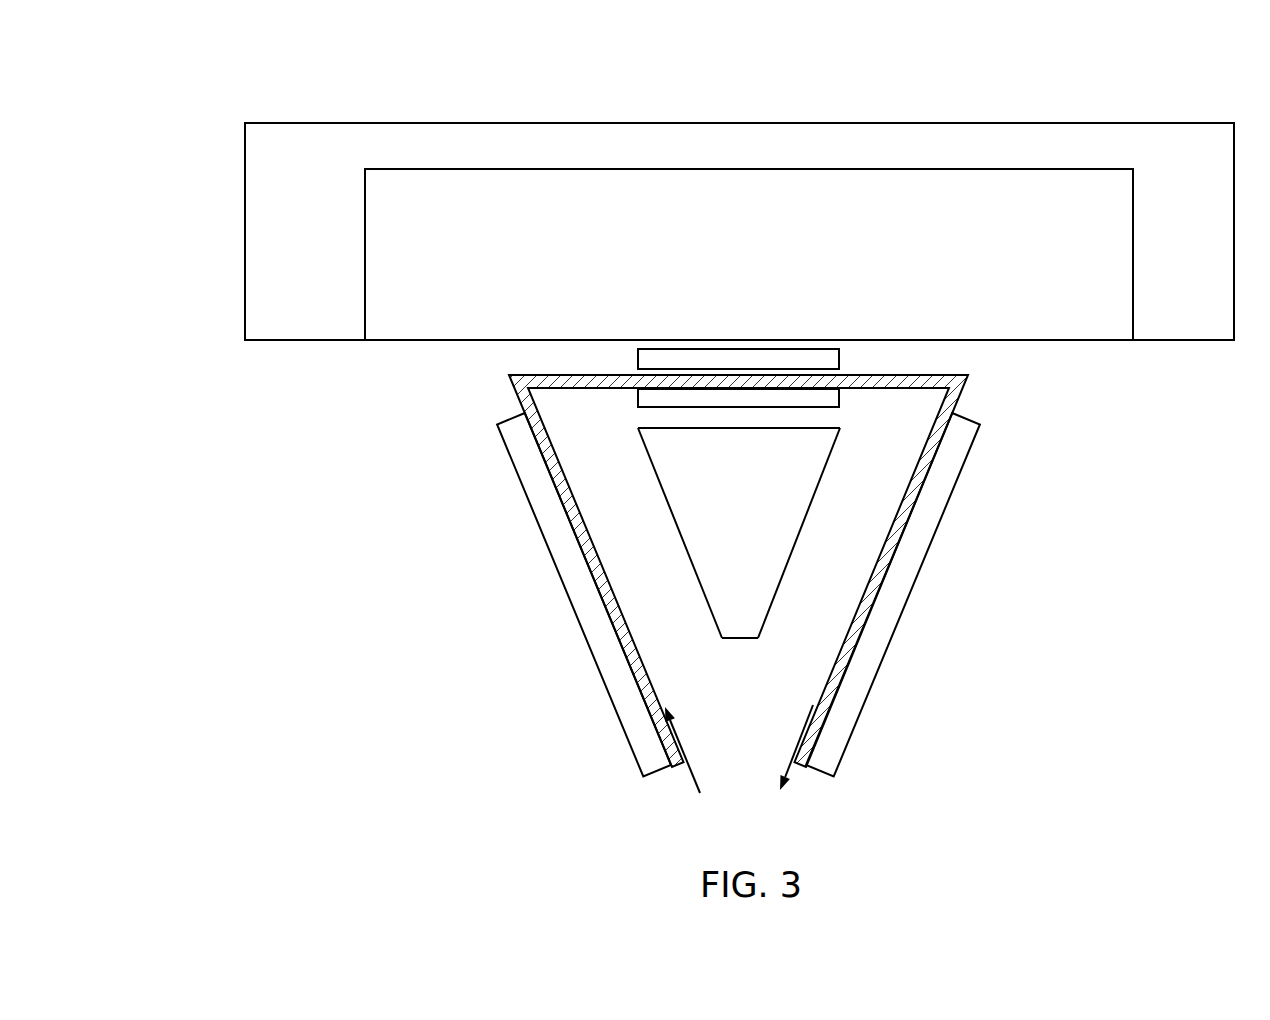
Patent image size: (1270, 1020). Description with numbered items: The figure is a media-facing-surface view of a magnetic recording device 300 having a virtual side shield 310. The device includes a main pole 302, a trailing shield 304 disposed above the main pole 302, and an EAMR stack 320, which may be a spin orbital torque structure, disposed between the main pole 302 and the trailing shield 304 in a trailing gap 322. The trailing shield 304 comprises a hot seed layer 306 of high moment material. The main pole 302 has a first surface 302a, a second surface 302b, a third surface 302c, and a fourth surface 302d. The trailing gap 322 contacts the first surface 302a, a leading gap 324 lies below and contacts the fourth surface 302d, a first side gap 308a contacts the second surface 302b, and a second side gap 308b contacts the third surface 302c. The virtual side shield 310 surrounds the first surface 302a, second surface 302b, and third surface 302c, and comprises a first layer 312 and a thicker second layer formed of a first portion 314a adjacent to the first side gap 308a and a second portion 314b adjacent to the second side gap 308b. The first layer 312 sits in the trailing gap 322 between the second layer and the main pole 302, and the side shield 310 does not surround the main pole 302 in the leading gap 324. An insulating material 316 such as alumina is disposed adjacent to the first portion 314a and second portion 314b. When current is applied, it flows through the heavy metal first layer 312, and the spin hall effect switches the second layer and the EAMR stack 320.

The magnetic recording device 300 is at (202, 60).
The trailing shield 304 is at (300, 312).
The hot seed layer 306 is at (445, 312).
The EAMR stack 320 is at (682, 305).
The trailing gap 322 is at (907, 369).
The virtual side shield 310 is at (477, 462).
The first layer 312 is at (583, 388).
The first portion 314a is at (548, 557).
The second portion 314b is at (929, 557).
The insulating material 316 is at (379, 581).
The main pole 302 is at (743, 562).
The first surface 302a is at (730, 430).
The second surface 302b is at (658, 488).
The third surface 302c is at (818, 488).
The fourth surface 302d is at (740, 640).
The first side gap 308a is at (682, 611).
The second side gap 308b is at (846, 611).
The leading gap 324 is at (755, 804).